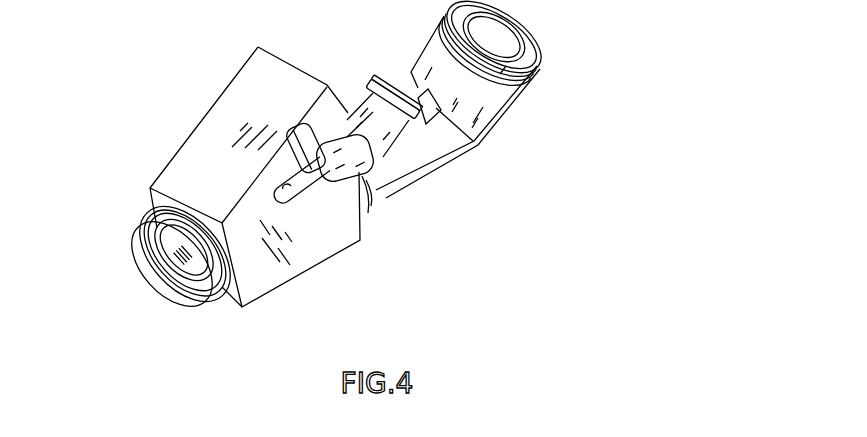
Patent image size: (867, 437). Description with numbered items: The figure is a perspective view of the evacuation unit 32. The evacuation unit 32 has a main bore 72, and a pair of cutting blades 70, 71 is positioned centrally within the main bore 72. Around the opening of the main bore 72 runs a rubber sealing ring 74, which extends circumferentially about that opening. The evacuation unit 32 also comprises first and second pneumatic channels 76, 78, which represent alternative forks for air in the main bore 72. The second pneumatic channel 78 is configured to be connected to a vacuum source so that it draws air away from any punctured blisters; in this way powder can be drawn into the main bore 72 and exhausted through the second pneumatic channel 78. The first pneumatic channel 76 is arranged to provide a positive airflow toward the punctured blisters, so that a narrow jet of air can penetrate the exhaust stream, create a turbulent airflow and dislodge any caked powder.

The evacuation unit 32 is at (185, 78).
The cutting blade 70 is at (174, 251).
The cutting blade 71 is at (200, 258).
The main bore 72 is at (173, 245).
The rubber sealing ring 74 is at (140, 230).
The first pneumatic channel 76 is at (380, 133).
The second pneumatic channel 78 is at (445, 142).